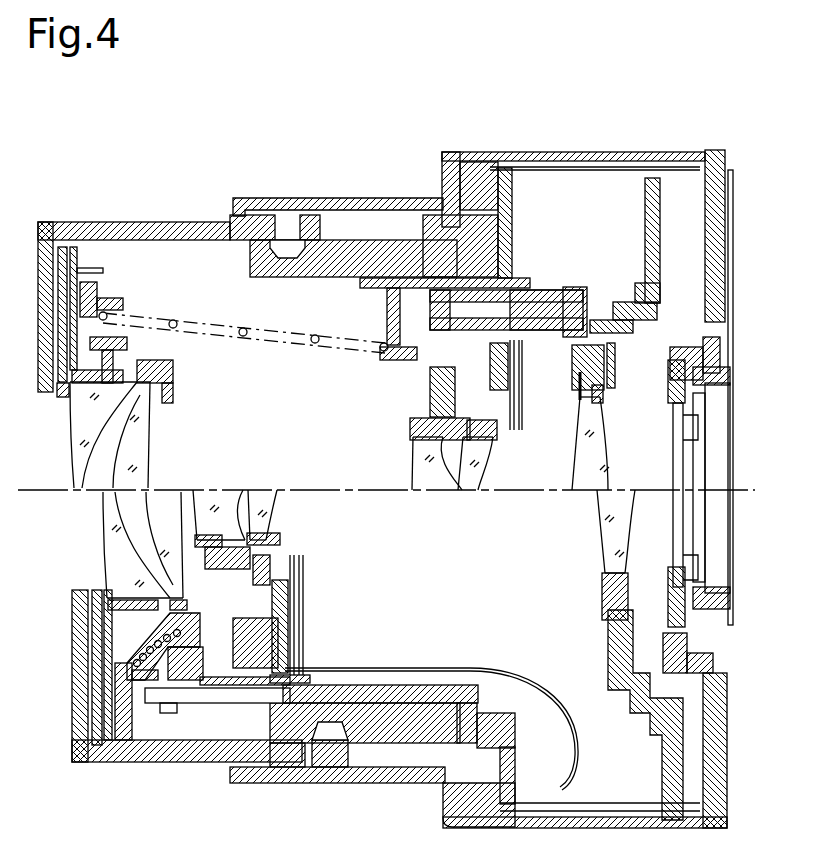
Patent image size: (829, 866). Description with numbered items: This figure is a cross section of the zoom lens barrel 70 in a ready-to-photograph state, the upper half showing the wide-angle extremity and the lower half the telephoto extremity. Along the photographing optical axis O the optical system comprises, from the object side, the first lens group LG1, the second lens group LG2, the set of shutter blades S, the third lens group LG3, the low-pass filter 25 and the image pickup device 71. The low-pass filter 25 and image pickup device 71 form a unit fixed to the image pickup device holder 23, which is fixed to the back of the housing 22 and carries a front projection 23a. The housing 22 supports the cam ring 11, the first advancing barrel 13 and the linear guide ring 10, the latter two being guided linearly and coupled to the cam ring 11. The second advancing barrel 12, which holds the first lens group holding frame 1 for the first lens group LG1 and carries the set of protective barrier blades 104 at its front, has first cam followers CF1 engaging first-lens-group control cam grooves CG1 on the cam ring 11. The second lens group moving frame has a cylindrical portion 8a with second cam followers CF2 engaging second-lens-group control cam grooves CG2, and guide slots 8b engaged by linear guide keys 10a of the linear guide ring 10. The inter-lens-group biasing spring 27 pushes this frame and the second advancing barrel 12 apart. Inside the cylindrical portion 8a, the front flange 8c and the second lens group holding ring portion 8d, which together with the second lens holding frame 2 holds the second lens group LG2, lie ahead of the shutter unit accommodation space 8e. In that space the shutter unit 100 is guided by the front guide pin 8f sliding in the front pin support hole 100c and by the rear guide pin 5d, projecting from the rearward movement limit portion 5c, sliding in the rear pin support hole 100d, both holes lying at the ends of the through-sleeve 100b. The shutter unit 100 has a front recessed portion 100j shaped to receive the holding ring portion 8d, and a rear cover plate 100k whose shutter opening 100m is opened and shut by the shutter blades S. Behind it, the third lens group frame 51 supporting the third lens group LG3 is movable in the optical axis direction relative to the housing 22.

The zoom lens barrel 70 is at (104, 114).
The second advancing barrel 12 is at (153, 232).
The first advancing barrel 13 is at (283, 199).
The cam ring 11 is at (318, 265).
The linear guide ring 10 is at (510, 209).
The linear guide key 10a is at (403, 686).
The housing 22 is at (598, 152).
The image pickup device holder 23 is at (717, 192).
The front projection 23a is at (697, 302).
The cylindrical portion 8a is at (503, 240).
The guide slots 8b is at (213, 700).
The front flange 8c is at (387, 312).
The second lens group holding ring portion 8d is at (440, 408).
The shutter unit accommodation space 8e is at (307, 662).
The front guide pin 8f is at (387, 296).
The rearward movement limit portion 5c is at (577, 291).
The rear guide pin 5d is at (537, 310).
The first-lens-group control cam groove CG1 is at (273, 253).
The second-lens-group control cam groove CG2 is at (393, 267).
The first cam follower CF1 is at (287, 258).
The second cam follower CF2 is at (358, 265).
The inter-lens-group biasing spring 27 is at (243, 337).
The set of protective barrier blades 104 is at (65, 388).
The shutter unit 100 is at (528, 347).
The through-sleeve 100b is at (570, 345).
The front pin support hole 100c is at (387, 343).
The rear pin support hole 100d is at (615, 310).
The front recessed portion 100j is at (443, 387).
The rear cover plate 100k is at (525, 410).
The shutter opening 100m is at (300, 550).
The shutter blades S is at (510, 437).
The second lens holding frame 2 is at (423, 440).
The first lens group holding frame 1 is at (117, 597).
The first lens group LG1 is at (162, 492).
The second lens group LG2 is at (478, 497).
The third lens group LG3 is at (577, 472).
The photographing optical axis O is at (340, 488).
The low-pass filter 25 is at (677, 443).
The image pickup device 71 is at (700, 456).
The third lens group frame 51 is at (608, 640).